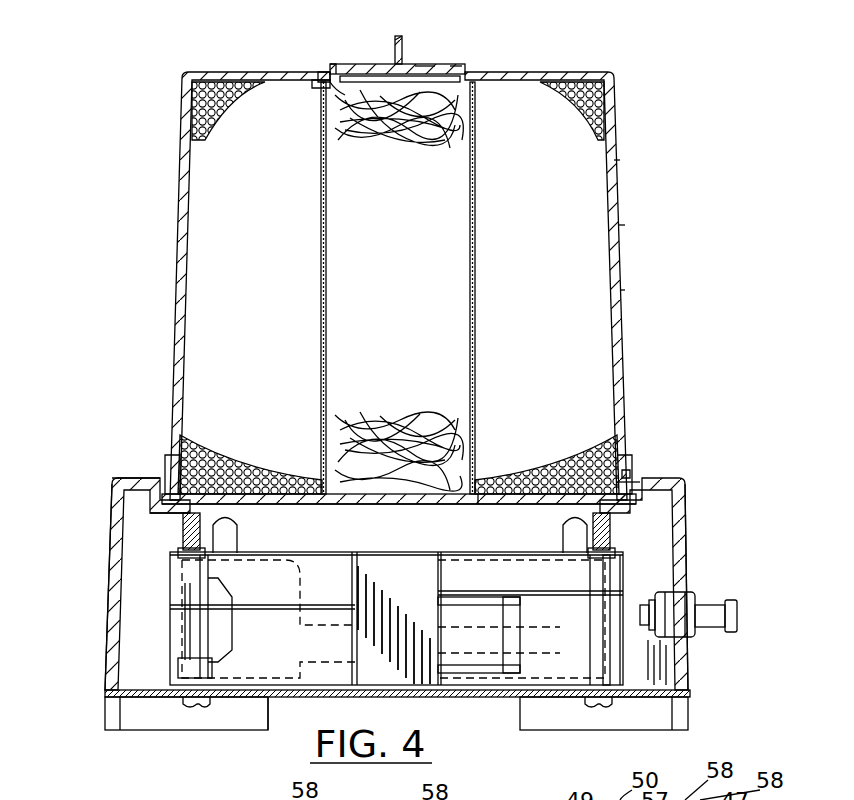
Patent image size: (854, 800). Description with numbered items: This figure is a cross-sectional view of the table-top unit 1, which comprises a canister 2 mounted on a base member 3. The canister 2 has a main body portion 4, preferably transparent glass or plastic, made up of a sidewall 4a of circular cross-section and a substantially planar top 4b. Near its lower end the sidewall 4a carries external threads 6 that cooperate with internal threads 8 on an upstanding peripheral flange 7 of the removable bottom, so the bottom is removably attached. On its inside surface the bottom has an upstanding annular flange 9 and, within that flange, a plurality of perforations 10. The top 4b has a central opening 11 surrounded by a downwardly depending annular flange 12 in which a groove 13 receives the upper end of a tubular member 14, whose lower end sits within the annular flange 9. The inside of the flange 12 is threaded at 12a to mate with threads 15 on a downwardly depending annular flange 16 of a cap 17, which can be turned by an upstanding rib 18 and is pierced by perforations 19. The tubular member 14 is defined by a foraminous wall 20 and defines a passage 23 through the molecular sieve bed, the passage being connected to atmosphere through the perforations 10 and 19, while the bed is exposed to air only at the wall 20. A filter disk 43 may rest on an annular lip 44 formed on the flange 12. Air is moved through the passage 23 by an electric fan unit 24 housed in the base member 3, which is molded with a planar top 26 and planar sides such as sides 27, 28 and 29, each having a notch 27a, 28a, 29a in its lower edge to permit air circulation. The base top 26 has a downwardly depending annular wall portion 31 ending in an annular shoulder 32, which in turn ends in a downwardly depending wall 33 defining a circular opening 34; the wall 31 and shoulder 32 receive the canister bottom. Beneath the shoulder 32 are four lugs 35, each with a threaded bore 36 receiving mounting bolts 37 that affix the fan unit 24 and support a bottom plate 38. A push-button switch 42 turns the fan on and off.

The unit 1 is at (622, 105).
The canister 2 is at (620, 160).
The base member 3 is at (688, 515).
The main body portion 4 is at (625, 225).
The sidewall 4a is at (625, 290).
The top 4b is at (580, 80).
The external threads 6 is at (632, 470).
The upstanding peripheral flange 7 is at (630, 460).
The internal threads 8 is at (635, 482).
The upstanding annular flange 9 is at (480, 500).
The perforations 10 is at (330, 505).
The central opening 11 is at (372, 64).
The annular flange 12 is at (320, 84).
The threads 12a is at (318, 72).
The groove 13 is at (460, 78).
The tubular member 14 is at (476, 230).
The threads 15 is at (335, 64).
The downwardly depending annular flange 16 is at (345, 95).
The cap 17 is at (425, 66).
The upstanding rib 18 is at (402, 42).
The perforations 19 is at (399, 40).
The foraminous wall 20 is at (476, 295).
The passage 23 is at (412, 288).
The electric fan unit 24 is at (425, 672).
The top 26 is at (122, 478).
The side 27 is at (690, 670).
The notch 27a is at (690, 705).
The side 28 is at (632, 725).
The notch 28a is at (270, 712).
The side 29 is at (110, 612).
The notch 29a is at (112, 712).
The annular wall portion 31 is at (118, 505).
The annular shoulder 32 is at (175, 512).
The downwardly depending wall 33 is at (238, 530).
The circular opening 34 is at (565, 522).
The lugs 35 is at (190, 540).
The threaded bore 36 is at (195, 560).
The mounting bolts 37 is at (198, 707).
The bottom plate 38 is at (118, 715).
The switch 42 is at (728, 602).
The filter disk 43 is at (455, 68).
The annular lip 44 is at (430, 135).